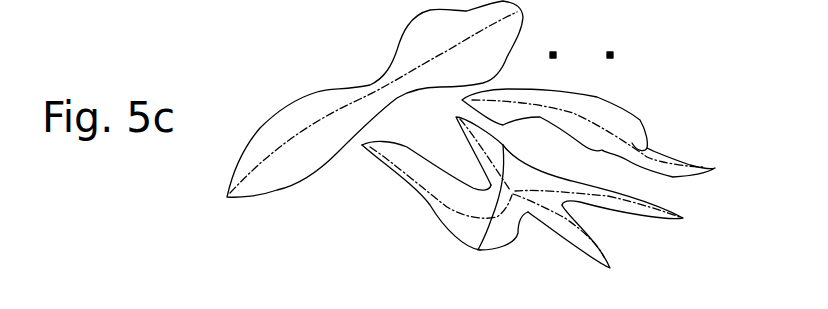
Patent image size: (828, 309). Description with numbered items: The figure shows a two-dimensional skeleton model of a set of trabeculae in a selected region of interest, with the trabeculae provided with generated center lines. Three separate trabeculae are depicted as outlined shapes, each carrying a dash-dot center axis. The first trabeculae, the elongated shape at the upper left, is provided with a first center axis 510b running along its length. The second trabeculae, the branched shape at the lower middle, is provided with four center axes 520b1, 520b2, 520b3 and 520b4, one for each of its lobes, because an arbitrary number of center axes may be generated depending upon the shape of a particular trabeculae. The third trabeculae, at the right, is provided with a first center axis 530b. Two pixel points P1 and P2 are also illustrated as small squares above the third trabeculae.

The first center axis 510b is at (318, 127).
The first center axis 530b is at (638, 108).
The center axis 520b1 is at (437, 191).
The center axis 520b2 is at (474, 249).
The center axis 520b3 is at (545, 221).
The center axis 520b4 is at (637, 200).
The pixel point P1 is at (559, 43).
The pixel point P2 is at (610, 43).